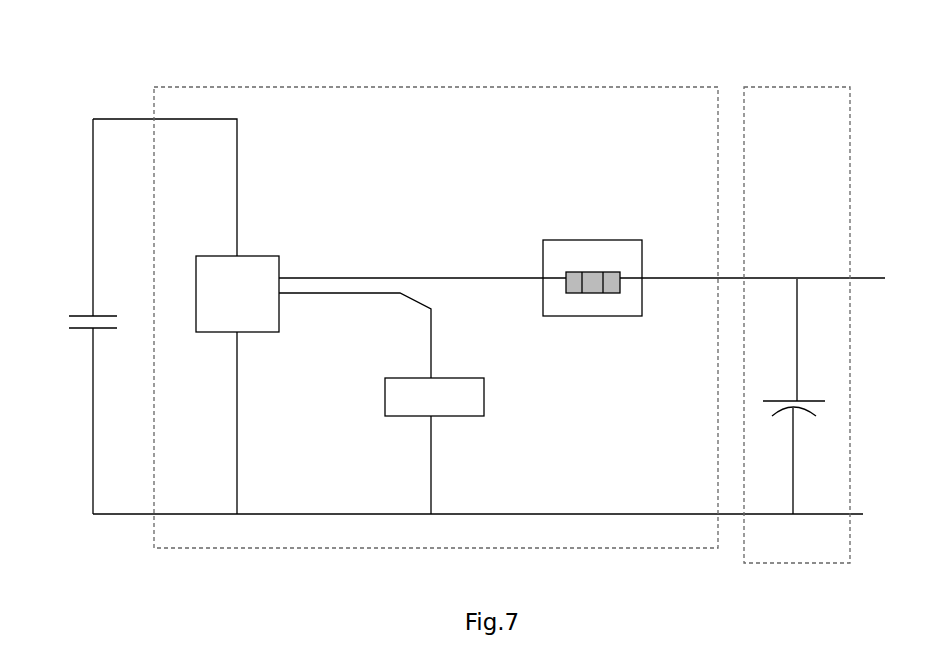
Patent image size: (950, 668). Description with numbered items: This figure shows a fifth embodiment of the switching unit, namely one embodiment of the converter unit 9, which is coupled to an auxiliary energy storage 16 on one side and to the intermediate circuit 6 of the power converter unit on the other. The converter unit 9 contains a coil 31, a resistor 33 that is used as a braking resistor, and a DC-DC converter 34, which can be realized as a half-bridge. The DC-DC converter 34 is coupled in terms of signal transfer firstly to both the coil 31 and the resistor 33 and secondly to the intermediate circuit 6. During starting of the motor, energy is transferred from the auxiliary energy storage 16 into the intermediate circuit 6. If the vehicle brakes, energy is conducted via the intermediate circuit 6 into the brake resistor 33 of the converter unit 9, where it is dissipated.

The intermediate circuit 6 is at (78, 312).
The converter unit 9 is at (510, 87).
The auxiliary energy storage 16 is at (786, 87).
The coil 31 is at (585, 240).
The resistor 33 is at (473, 412).
The DC-DC converter 34 is at (247, 250).